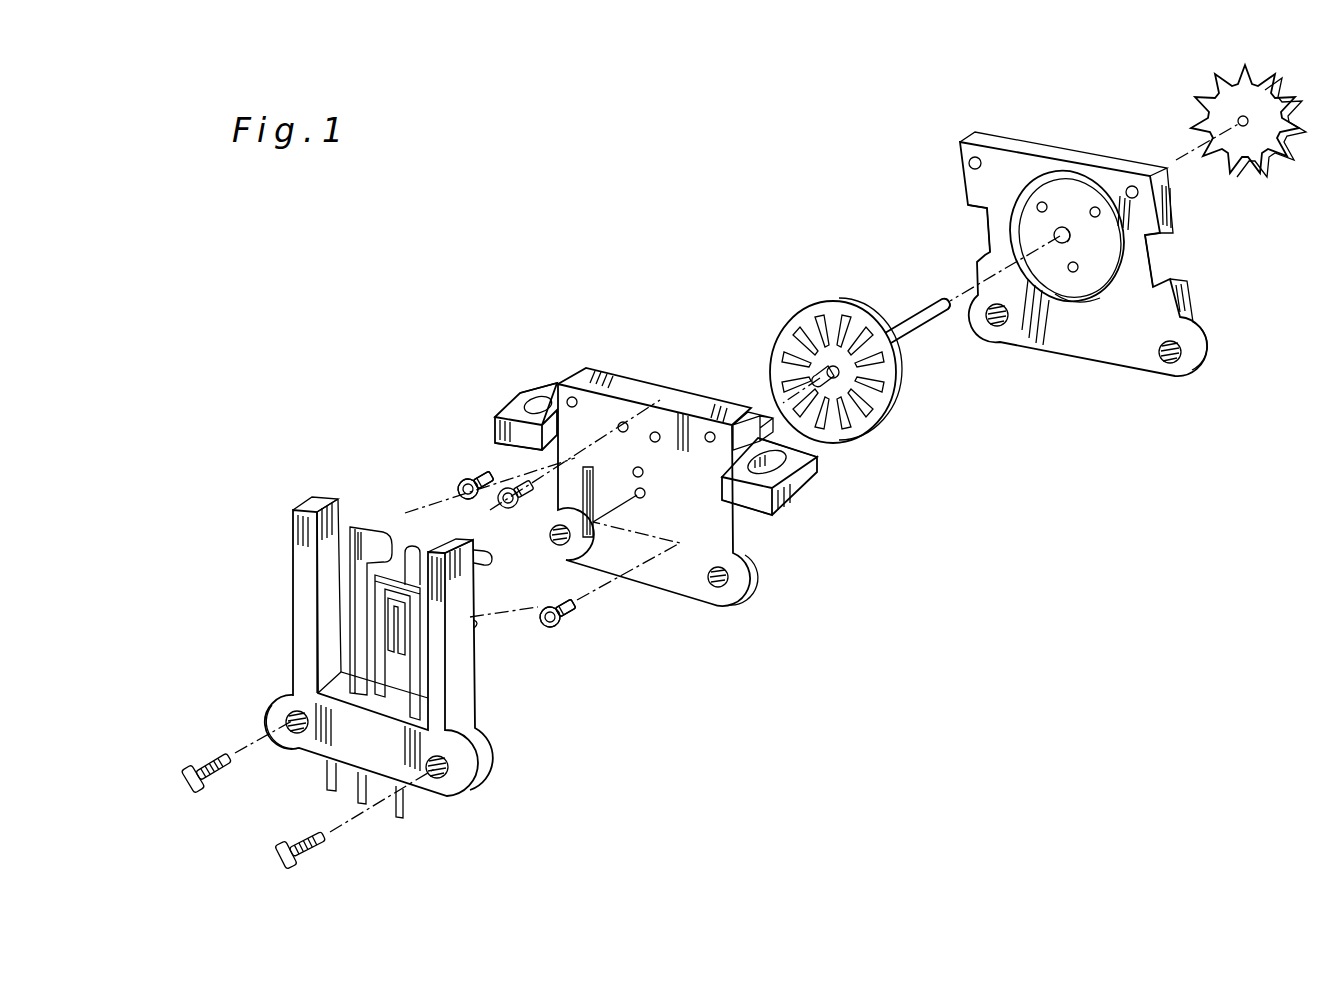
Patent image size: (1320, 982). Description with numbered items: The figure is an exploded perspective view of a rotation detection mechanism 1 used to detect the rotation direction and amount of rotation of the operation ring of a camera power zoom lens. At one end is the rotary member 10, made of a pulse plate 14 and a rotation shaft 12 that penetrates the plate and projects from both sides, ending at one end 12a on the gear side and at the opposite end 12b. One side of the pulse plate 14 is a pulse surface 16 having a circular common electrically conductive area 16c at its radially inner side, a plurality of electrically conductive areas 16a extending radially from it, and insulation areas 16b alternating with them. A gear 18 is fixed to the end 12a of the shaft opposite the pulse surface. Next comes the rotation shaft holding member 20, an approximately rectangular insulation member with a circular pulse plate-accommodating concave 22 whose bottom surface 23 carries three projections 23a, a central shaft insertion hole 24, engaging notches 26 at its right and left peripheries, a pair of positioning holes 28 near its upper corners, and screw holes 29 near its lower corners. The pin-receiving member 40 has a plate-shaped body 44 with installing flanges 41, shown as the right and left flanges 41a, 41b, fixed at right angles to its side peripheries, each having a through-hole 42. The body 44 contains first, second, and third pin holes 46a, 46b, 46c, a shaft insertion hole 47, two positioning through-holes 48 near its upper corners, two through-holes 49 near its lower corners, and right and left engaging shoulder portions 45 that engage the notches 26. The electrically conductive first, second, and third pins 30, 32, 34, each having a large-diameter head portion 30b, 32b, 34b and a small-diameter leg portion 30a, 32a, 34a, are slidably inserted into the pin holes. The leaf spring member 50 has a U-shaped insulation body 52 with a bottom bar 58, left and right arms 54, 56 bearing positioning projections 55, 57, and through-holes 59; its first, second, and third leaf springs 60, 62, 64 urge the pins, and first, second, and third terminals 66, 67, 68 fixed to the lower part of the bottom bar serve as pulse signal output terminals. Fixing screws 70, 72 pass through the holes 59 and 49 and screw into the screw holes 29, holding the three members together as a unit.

The rotation detection mechanism 1 is at (648, 238).
The rotary member 10 is at (892, 345).
The rotation shaft 12 is at (892, 319).
The one end of the rotation shaft 12a is at (930, 299).
The shaft hub portion 12b is at (818, 363).
The pulse plate 14 is at (847, 328).
The pulse surface 16 is at (827, 321).
The electrically conductive areas 16a is at (824, 303).
The insulation areas 16b is at (847, 303).
The common electrically conductive area 16c is at (788, 334).
The gear 18 is at (1272, 163).
The rotation shaft holding member 20 is at (1080, 240).
The pulse plate-accommodating concave 22 is at (1052, 174).
The bottom surface 23 is at (1095, 304).
The projections 23a is at (1038, 202).
The shaft insertion hole 24 is at (1076, 250).
The engaging notches 26 is at (985, 227).
The positioning holes 28 is at (968, 164).
The screw holes 29 is at (997, 327).
The first pin 30 is at (423, 439).
The small-diameter leg portion 30a is at (490, 475).
The large-diameter head portion 30b is at (458, 488).
The second pin 32 is at (509, 509).
The small-diameter leg portion 32a is at (605, 516).
The large-diameter head portion 32b is at (476, 623).
The third pin 34 is at (596, 652).
The small-diameter leg portion 34a is at (577, 603).
The large-diameter head portion 34b is at (552, 630).
The pin-receiving member 40 is at (648, 472).
The installing flanges 41 is at (657, 443).
The boss front face 41a is at (503, 447).
The boss top face 41b is at (850, 497).
The through-hole 42 is at (538, 397).
The body 44 is at (650, 395).
The engaging shoulder portions 45 is at (762, 416).
The first pin hole 46a is at (623, 421).
The second pin hole 46b is at (656, 431).
The third pin hole 46c is at (644, 498).
The shaft insertion hole 47 is at (644, 472).
The positioning through-holes 48 is at (572, 396).
The through-holes 49 is at (556, 530).
The leaf spring member 50 is at (380, 660).
The body 52 is at (420, 792).
The left arm 54 is at (293, 608).
The positioning projection 55 is at (350, 517).
The right arm 56 is at (476, 662).
The positioning projection 57 is at (478, 553).
The bottom bar 58 is at (290, 750).
The through-holes 59 is at (292, 710).
The first leaf spring 60 is at (368, 542).
The second leaf spring 62 is at (412, 548).
The third leaf spring 64 is at (380, 587).
The first terminal 66 is at (325, 785).
The second terminal 67 is at (357, 793).
The third terminal 68 is at (398, 819).
The fixing screw 70 is at (197, 792).
The fixing screw 72 is at (290, 866).